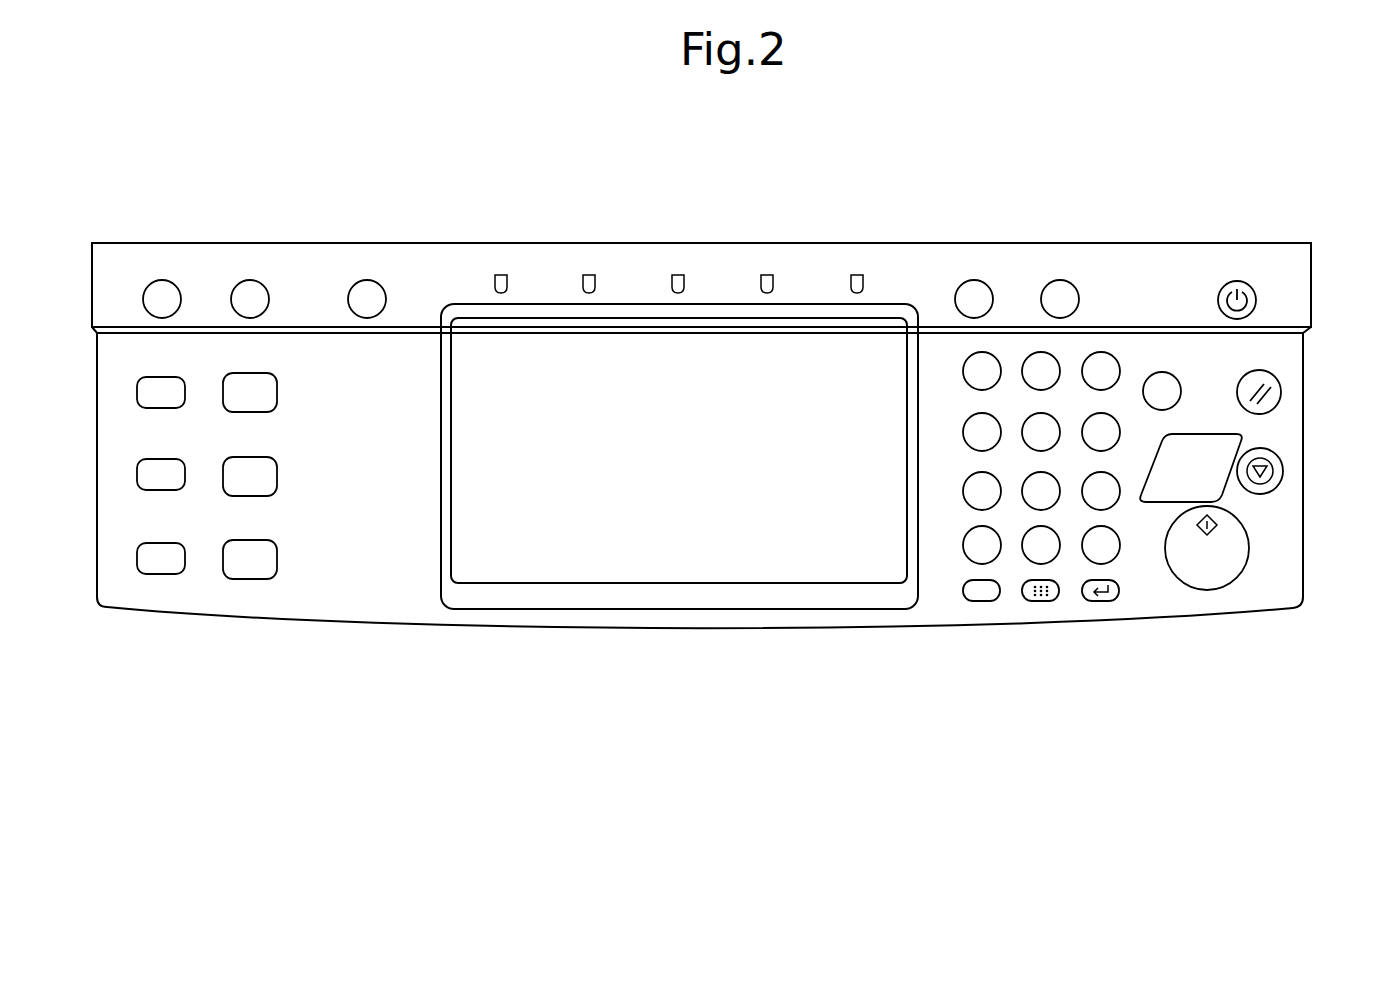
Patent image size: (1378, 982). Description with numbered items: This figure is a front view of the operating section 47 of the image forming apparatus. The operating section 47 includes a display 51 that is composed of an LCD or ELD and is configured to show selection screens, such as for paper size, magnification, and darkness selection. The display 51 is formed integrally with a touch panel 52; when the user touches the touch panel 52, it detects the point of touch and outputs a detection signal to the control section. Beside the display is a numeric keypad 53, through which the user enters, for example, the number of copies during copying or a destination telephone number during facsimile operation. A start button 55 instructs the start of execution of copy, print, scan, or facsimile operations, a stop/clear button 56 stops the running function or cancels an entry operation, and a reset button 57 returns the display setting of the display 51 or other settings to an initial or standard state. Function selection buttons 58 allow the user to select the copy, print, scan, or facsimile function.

The operating section 47 is at (880, 244).
The display 51 is at (679, 491).
The touch panel 52 is at (539, 548).
The numeric keypad 53 is at (948, 561).
The start button 55 is at (1200, 548).
The stop/clear button 56 is at (1240, 434).
The reset button 57 is at (1273, 392).
The function selection buttons 58 is at (308, 565).